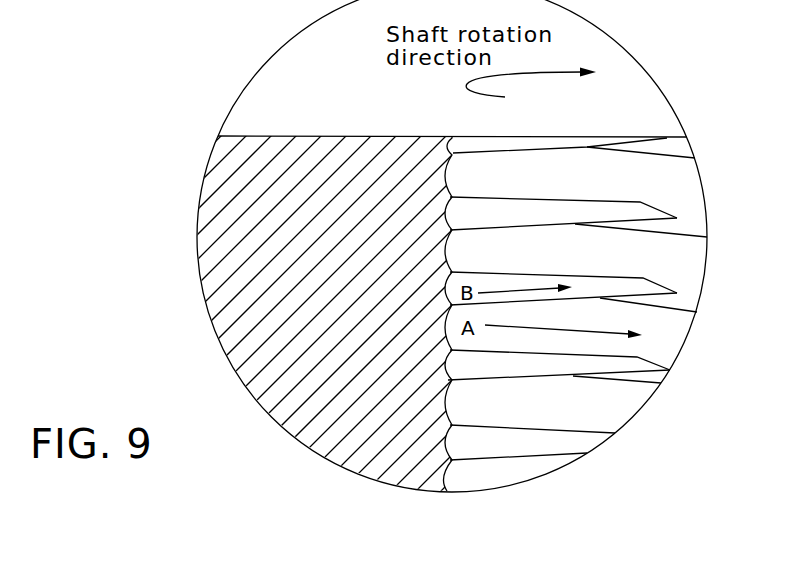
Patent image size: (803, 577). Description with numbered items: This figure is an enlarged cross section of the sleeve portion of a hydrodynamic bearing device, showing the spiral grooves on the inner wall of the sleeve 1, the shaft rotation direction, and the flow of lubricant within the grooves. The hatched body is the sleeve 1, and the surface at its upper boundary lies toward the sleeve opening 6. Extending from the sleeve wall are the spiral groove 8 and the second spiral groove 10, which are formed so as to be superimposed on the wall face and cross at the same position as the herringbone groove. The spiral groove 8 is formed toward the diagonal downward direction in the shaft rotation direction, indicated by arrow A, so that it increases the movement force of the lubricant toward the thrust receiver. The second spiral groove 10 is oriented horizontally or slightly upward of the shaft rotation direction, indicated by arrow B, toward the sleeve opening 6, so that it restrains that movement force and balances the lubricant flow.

The sleeve 1 is at (253, 362).
The sleeve opening 6 is at (323, 135).
The spiral groove 8 is at (680, 178).
The second spiral groove 10 is at (527, 217).